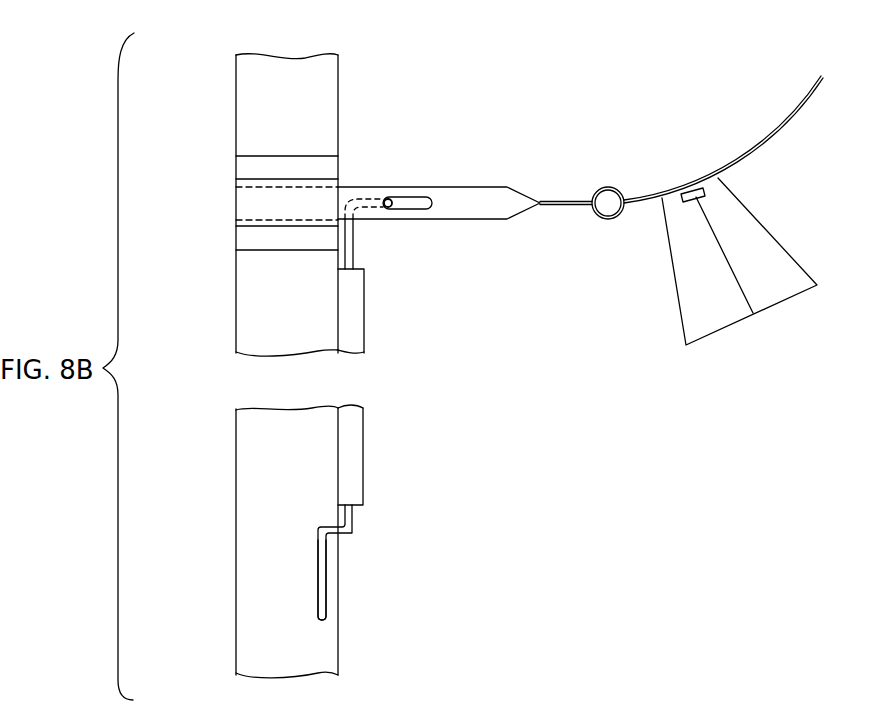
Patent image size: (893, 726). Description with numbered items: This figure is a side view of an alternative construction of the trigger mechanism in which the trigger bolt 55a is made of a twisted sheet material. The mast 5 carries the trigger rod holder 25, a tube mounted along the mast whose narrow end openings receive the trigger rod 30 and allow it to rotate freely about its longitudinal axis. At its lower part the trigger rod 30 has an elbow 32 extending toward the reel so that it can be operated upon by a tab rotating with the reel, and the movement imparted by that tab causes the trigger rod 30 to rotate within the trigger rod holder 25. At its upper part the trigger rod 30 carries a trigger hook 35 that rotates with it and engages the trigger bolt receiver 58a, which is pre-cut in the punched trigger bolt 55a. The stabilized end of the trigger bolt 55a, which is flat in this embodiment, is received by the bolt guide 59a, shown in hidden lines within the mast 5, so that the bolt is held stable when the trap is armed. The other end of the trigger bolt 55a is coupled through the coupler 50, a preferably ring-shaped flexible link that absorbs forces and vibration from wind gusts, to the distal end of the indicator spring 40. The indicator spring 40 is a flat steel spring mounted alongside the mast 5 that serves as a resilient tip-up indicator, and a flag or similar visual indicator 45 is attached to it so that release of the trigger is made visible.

The mast 5 is at (236, 98).
The trigger rod holder 25 is at (365, 455).
The trigger rod 30 is at (355, 525).
The elbow 32 is at (322, 590).
The trigger hook 35 is at (388, 200).
The indicator spring 40 is at (757, 143).
The visual indicator 45 is at (682, 330).
The coupler 50 is at (605, 218).
The trigger bolt 55a is at (482, 187).
The trigger bolt receiver 58a is at (415, 210).
The bolt guide 59a is at (236, 203).